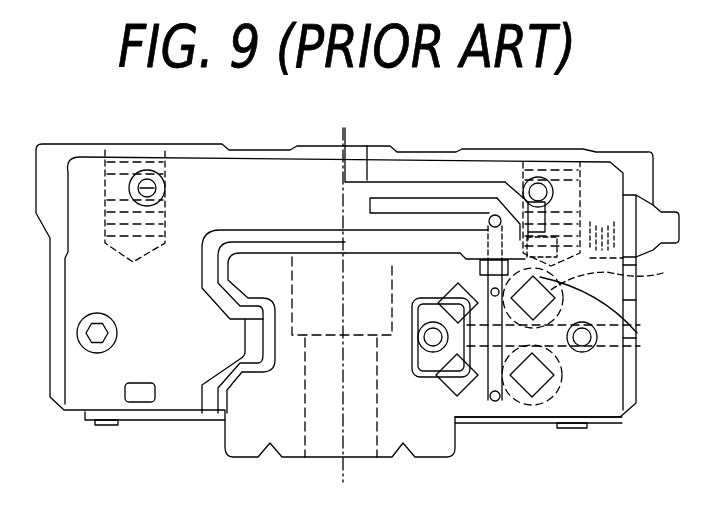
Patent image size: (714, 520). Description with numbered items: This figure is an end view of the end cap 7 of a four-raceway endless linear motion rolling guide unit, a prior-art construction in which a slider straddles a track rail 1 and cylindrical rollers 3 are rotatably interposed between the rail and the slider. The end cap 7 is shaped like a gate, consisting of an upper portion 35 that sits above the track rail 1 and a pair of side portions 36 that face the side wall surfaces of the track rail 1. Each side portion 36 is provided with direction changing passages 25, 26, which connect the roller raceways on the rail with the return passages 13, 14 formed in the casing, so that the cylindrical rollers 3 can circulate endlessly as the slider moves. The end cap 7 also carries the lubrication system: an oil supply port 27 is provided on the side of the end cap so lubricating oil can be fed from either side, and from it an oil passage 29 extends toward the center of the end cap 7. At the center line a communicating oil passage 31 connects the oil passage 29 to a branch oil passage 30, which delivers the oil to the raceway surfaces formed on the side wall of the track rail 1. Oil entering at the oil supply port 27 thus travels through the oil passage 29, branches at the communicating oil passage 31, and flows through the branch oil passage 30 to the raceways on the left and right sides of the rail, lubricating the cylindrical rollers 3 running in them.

The track rail 1 is at (223, 437).
The cylindrical rollers 3 is at (455, 296).
The end cap 7 is at (93, 148).
The return passage 13 is at (573, 424).
The return passage 14 is at (621, 274).
The direction changing passage 25 is at (480, 400).
The direction changing passage 26 is at (545, 363).
The oil supply port 27 is at (607, 205).
The oil passage 29 is at (462, 188).
The branch oil passage 30 is at (417, 220).
The communicating oil passage 31 is at (372, 212).
The upper portion 35 is at (490, 172).
The side portions 36 is at (610, 300).